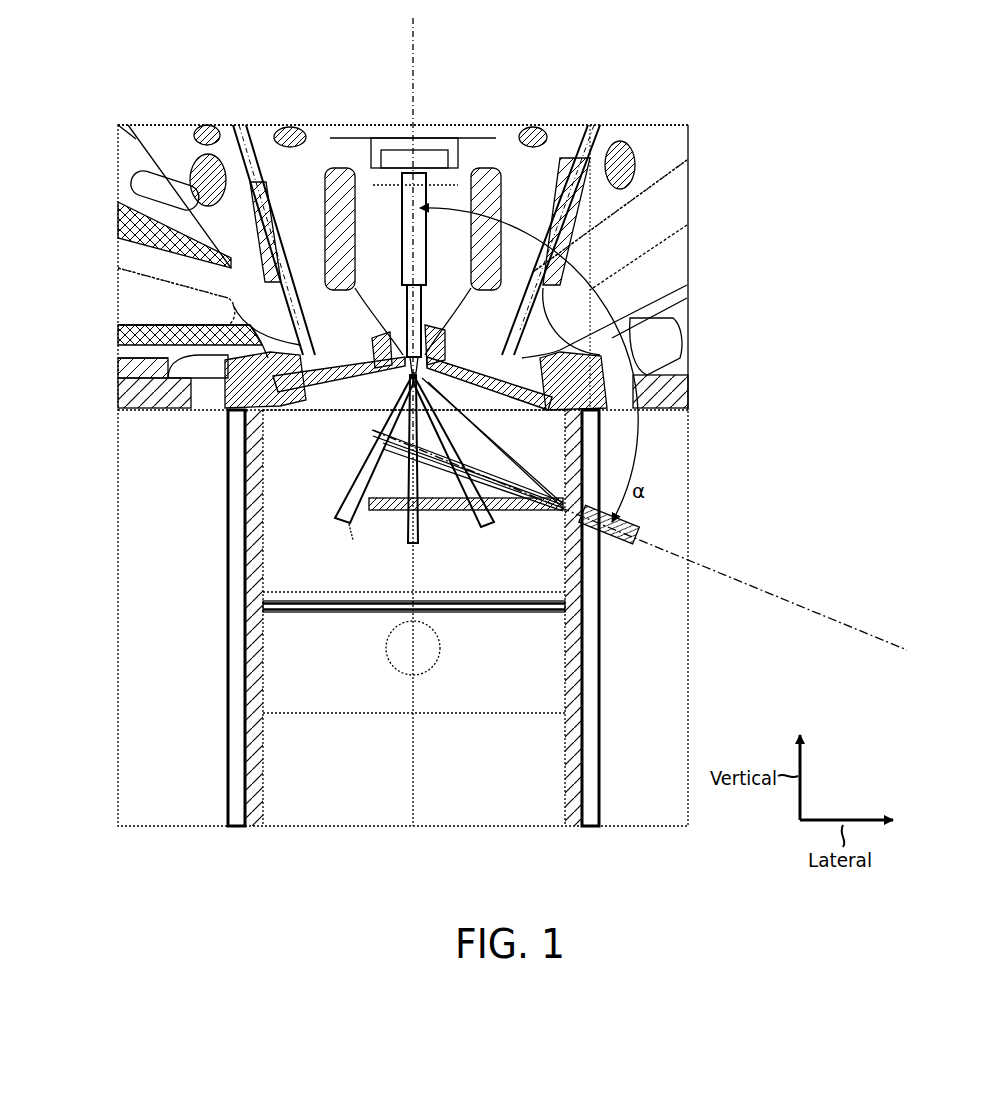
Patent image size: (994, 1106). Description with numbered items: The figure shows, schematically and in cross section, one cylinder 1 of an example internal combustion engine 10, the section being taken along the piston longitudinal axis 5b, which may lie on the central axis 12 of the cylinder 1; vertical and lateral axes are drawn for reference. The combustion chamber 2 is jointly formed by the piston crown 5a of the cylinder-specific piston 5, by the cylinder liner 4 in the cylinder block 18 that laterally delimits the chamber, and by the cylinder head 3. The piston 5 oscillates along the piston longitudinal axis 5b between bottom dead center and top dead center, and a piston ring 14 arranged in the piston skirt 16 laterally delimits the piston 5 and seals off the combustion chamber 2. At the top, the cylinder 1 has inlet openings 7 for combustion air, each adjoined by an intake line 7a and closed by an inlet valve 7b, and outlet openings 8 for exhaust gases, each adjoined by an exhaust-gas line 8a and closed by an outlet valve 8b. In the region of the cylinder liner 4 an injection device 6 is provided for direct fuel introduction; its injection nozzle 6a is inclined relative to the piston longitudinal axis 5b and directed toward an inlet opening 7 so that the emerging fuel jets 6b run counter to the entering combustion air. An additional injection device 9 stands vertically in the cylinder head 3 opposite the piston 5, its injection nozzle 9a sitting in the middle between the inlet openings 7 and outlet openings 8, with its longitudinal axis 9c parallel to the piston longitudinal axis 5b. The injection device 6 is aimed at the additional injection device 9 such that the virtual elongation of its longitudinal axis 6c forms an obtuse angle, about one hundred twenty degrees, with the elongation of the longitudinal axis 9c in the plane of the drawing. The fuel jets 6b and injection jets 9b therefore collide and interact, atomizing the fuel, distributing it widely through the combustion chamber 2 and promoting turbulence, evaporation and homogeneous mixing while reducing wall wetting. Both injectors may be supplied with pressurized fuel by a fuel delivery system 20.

The cylinder 1 is at (97, 755).
The combustion chamber 2 is at (414, 495).
The cylinder head 3 is at (690, 397).
The cylinder liner 4 is at (228, 624).
The piston 5 is at (537, 675).
The piston crown 5a is at (489, 590).
The piston longitudinal axis 5b is at (410, 745).
The injection device 6 is at (640, 540).
The injection nozzle 6a is at (466, 504).
The fuel jets 6b is at (517, 500).
The longitudinal axis of the injection device 6c is at (837, 625).
The inlet opening 7 is at (236, 412).
The intake line 7a is at (120, 317).
The inlet valve 7b is at (242, 126).
The outlet opening 8 is at (642, 414).
The exhaust-gas line 8a is at (665, 212).
The outlet valve 8b is at (597, 125).
The additional injection device 9 is at (357, 133).
The injection nozzle 9a is at (414, 329).
The injection jets 9b is at (406, 515).
The longitudinal axis of the additional injection device 9c is at (418, 76).
The internal combustion engine 10 is at (826, 243).
The central axis of the cylinder 12 is at (414, 552).
The piston ring 14 is at (315, 607).
The piston skirt 16 is at (352, 620).
The cylinder block 18 is at (236, 515).
The fuel delivery system 20 is at (757, 332).